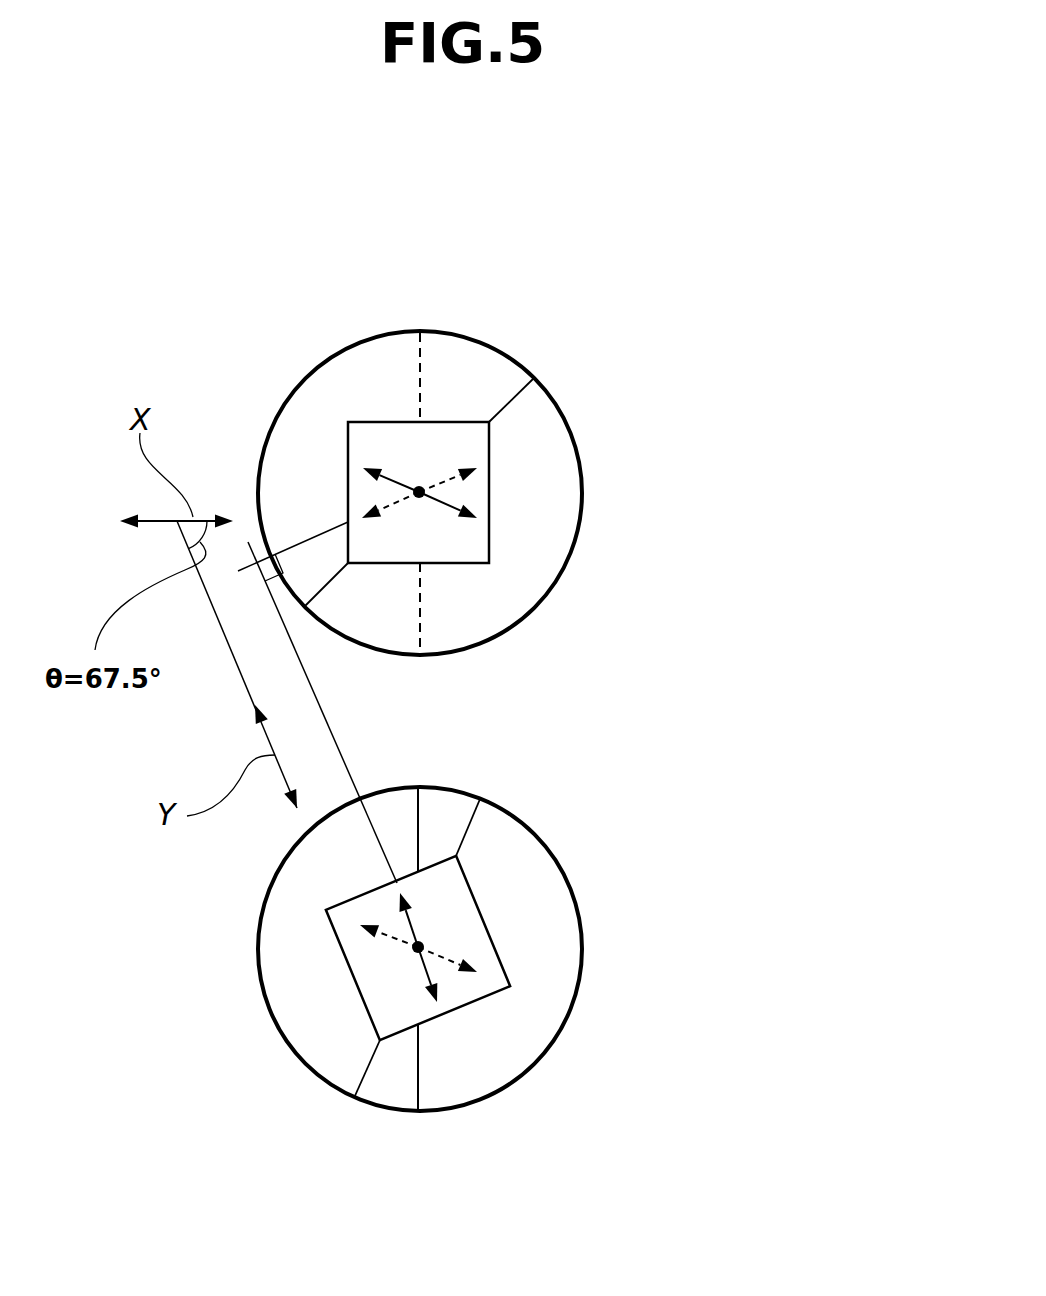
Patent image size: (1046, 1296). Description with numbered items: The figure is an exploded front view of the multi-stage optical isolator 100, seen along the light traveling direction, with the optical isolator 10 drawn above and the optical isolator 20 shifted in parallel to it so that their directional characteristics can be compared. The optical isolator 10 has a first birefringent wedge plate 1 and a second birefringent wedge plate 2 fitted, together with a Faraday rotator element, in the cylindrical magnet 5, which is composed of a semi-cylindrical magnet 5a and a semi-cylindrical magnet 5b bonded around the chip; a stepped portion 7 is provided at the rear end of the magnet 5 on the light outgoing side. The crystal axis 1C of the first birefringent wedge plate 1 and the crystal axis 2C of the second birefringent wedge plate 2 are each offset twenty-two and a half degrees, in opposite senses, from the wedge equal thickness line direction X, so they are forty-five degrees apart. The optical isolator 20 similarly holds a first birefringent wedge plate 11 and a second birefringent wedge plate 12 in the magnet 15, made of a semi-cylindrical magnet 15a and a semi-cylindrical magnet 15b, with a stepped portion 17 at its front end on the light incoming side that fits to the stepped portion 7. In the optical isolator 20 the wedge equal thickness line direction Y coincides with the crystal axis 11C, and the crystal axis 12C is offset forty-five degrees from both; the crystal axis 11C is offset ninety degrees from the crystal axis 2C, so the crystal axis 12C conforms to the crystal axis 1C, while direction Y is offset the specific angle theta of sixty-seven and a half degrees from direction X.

The multi-stage optical isolator 100 is at (793, 640).
The optical isolator 10 is at (521, 468).
The optical isolator 20 is at (458, 970).
The first birefringent wedge plate 1 is at (533, 492).
The second birefringent wedge plate 2 is at (477, 533).
The crystal axis 1C is at (440, 478).
The crystal axis 2C is at (440, 478).
The cylindrical magnet 5 is at (468, 442).
The semi-cylindrical magnet 5a is at (460, 475).
The semi-cylindrical magnet 5b is at (485, 362).
The stepped portion 7 is at (420, 383).
The first birefringent wedge plate 11 is at (551, 953).
The second birefringent wedge plate 12 is at (483, 958).
The crystal axis 11C is at (427, 970).
The crystal axis 12C is at (437, 947).
The magnet 15 is at (357, 1000).
The semi-cylindrical magnet 15a is at (340, 1038).
The semi-cylindrical magnet 15b is at (453, 1090).
The stepped portion 17 is at (420, 850).